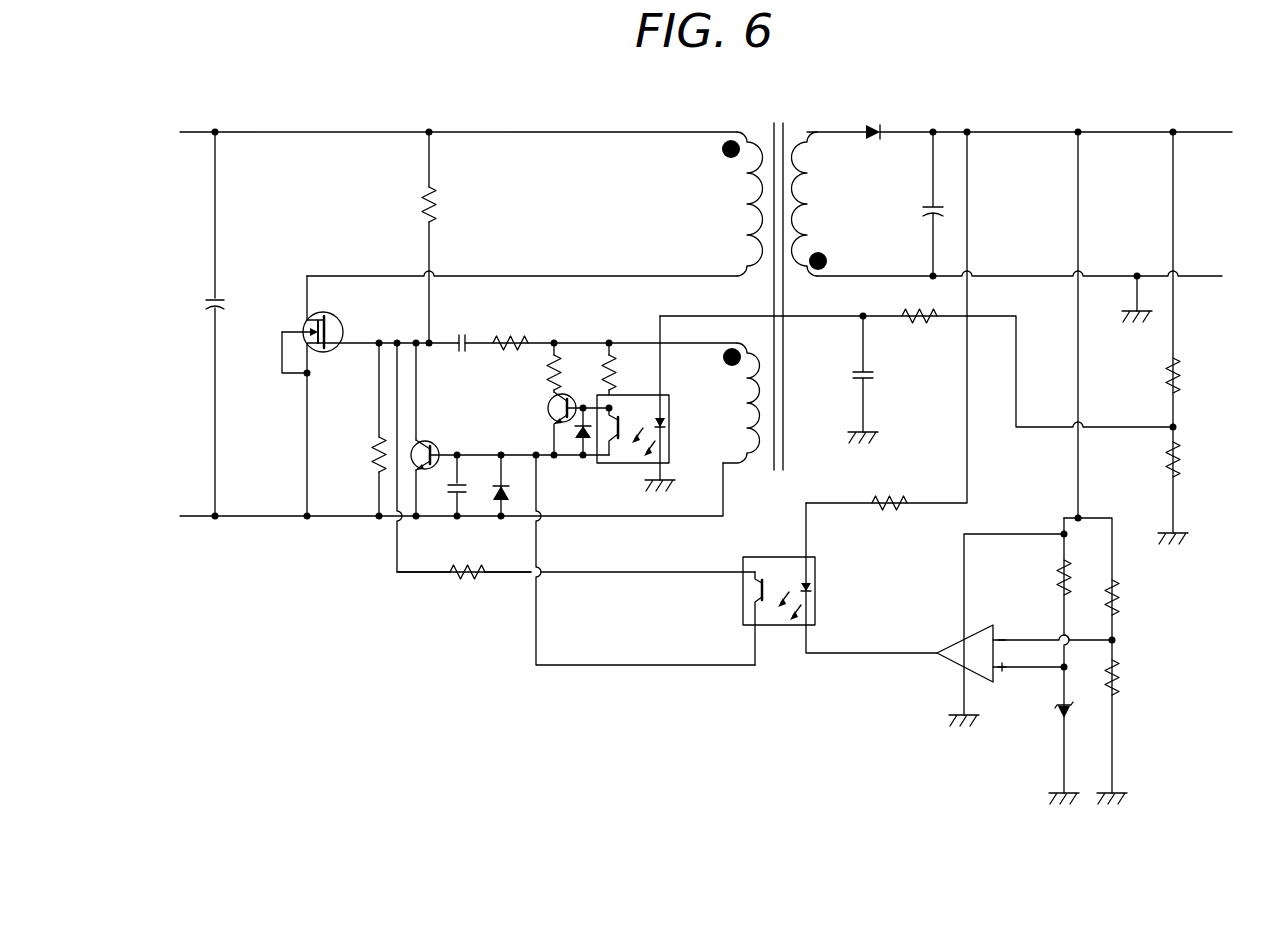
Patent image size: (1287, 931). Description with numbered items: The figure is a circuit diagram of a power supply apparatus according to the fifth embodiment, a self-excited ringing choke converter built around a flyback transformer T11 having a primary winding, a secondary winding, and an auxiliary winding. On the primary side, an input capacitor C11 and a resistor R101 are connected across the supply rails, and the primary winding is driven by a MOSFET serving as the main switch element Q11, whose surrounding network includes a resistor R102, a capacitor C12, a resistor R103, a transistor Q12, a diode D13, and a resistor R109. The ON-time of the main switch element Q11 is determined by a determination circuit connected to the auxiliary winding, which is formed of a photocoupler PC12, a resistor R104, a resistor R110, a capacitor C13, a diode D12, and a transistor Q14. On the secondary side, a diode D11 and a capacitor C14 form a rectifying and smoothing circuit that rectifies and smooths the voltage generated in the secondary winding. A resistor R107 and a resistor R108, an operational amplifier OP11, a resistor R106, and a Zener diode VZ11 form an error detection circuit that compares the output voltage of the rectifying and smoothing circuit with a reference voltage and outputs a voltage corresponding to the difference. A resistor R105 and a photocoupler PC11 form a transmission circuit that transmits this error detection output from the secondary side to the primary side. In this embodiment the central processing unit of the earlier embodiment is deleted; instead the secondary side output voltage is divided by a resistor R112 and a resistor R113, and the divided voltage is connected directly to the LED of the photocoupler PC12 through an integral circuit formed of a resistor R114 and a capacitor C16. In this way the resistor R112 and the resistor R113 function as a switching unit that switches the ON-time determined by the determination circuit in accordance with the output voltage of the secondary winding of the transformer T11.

The transformer T11 is at (790, 277).
The capacitor C11 is at (193, 303).
The resistor R101 is at (403, 237).
The main switch element Q11 is at (300, 323).
The resistor R102 is at (351, 429).
The capacitor C12 is at (455, 328).
The resistor R103 is at (514, 327).
The resistor R104 is at (528, 367).
The resistor R110 is at (611, 362).
The transistor Q14 is at (559, 423).
The transistor Q12 is at (434, 442).
The capacitor C13 is at (449, 496).
The diode D13 is at (496, 496).
The diode D12 is at (580, 447).
The photocoupler PC12 is at (630, 466).
The resistor R109 is at (464, 588).
The photocoupler PC11 is at (779, 596).
The diode D11 is at (876, 114).
The capacitor C14 is at (911, 204).
The resistor R114 is at (917, 332).
The capacitor C16 is at (884, 374).
The resistor R105 is at (885, 488).
The resistor R106 is at (1035, 577).
The resistor R107 is at (1140, 597).
The resistor R108 is at (1140, 677).
The operational amplifier OP11 is at (952, 645).
The Zener diode VZ11 is at (1036, 708).
The resistor R112 is at (1202, 375).
The resistor R113 is at (1202, 459).